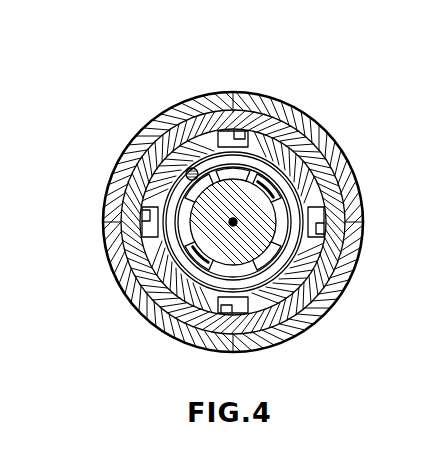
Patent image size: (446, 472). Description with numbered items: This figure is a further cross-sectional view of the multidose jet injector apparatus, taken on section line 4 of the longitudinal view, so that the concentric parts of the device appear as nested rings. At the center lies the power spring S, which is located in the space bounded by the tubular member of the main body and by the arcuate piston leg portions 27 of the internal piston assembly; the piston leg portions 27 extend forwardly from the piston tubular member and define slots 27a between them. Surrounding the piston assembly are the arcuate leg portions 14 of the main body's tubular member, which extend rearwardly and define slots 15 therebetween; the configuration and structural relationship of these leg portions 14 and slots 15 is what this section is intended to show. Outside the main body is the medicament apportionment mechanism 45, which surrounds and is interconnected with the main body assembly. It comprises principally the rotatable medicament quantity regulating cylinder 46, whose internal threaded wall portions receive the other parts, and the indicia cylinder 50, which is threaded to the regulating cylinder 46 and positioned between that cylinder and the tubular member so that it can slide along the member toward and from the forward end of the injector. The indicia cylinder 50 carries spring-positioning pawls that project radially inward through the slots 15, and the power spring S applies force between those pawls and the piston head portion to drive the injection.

The section line 4— 4 is at (364, 221).
The arcuate leg portions 14 is at (216, 138).
The slots 15 is at (243, 137).
The arcuate piston leg portions 27 is at (200, 197).
The slots 27a is at (287, 178).
The medicament apportionment mechanism 45 is at (283, 105).
The rotatable medicament quantity regulating cylinder 46 is at (122, 272).
The indicia cylinder 50 is at (300, 137).
The power spring S is at (190, 128).